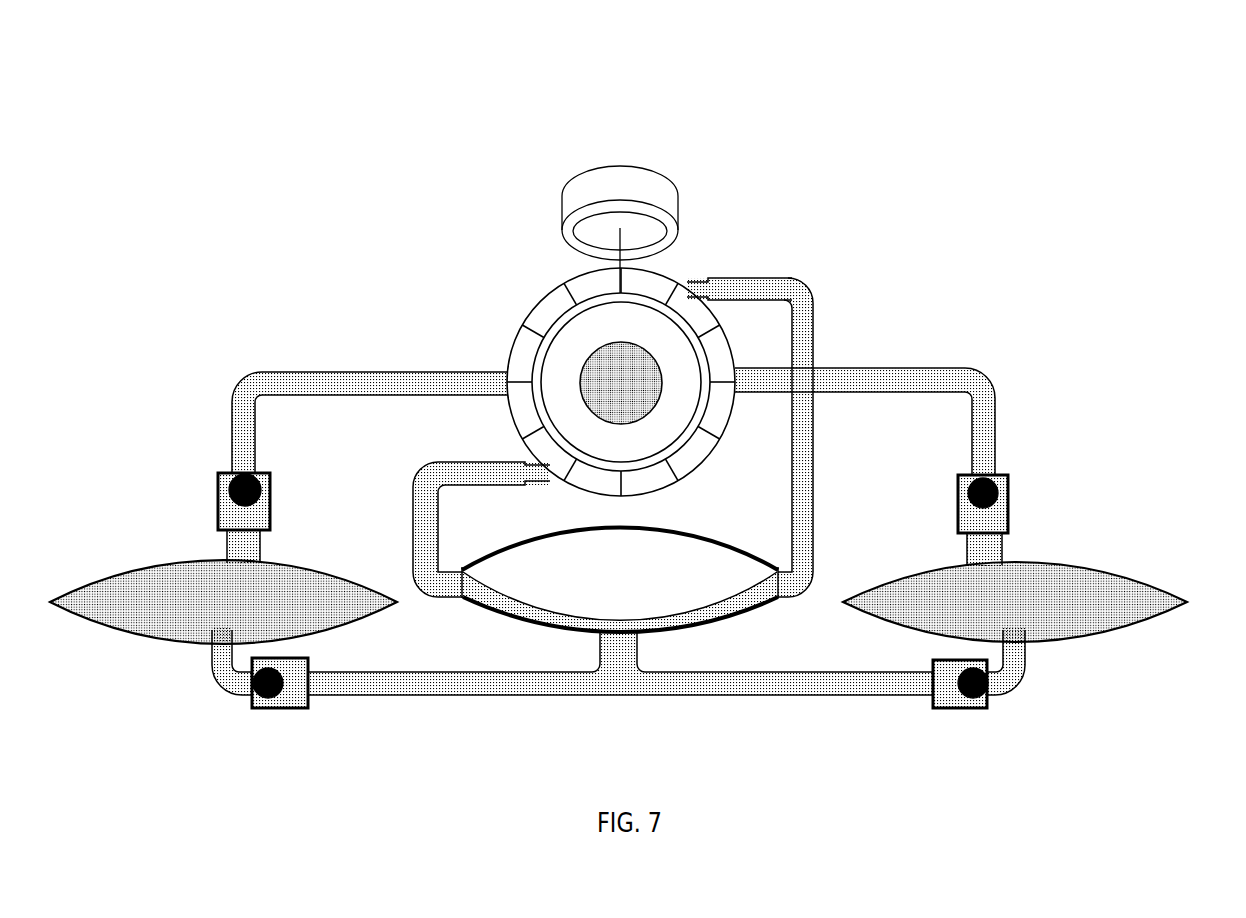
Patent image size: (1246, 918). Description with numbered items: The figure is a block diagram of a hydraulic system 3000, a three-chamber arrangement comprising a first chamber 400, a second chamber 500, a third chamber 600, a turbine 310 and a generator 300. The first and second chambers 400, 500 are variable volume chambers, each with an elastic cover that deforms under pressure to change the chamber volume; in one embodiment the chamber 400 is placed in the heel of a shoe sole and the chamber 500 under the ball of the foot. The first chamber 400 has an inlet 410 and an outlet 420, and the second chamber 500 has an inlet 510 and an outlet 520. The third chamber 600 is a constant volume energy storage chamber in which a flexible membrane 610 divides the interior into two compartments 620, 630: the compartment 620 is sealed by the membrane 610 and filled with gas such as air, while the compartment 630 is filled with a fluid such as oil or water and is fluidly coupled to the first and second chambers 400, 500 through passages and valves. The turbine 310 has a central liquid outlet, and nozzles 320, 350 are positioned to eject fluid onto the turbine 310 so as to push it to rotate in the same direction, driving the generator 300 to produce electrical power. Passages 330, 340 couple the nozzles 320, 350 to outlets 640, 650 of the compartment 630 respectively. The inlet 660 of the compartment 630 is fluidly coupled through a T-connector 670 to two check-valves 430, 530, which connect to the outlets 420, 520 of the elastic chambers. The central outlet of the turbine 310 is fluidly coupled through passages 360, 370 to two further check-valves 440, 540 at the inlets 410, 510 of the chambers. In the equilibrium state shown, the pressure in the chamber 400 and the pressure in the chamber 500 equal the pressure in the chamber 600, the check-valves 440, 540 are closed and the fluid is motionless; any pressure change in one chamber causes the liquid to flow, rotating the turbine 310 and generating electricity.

The hydraulic system 3000 is at (633, 66).
The generator 300 is at (676, 213).
The turbine 310 is at (518, 331).
The nozzle 320 is at (521, 467).
The passage 330 is at (414, 511).
The passage 340 is at (815, 467).
The nozzle 350 is at (713, 284).
The passage 360 is at (300, 365).
The passage 370 is at (941, 362).
The first chamber 400 is at (110, 569).
The inlet 410 is at (264, 549).
The outlet 420 is at (211, 641).
The check-valve 430 is at (276, 712).
The check-valve 440 is at (273, 481).
The second chamber 500 is at (1151, 590).
The inlet 510 is at (1001, 551).
The outlet 520 is at (1029, 639).
The check-valve 530 is at (962, 712).
The check-valve 540 is at (1010, 495).
The third chamber 600 is at (623, 579).
The flexible membrane 610 is at (721, 595).
The compartment 620 is at (572, 557).
The compartment 630 is at (730, 617).
The outlet 640 is at (458, 599).
The outlet 650 is at (786, 596).
The inlet 660 is at (631, 634).
The T-connector 670 is at (620, 699).